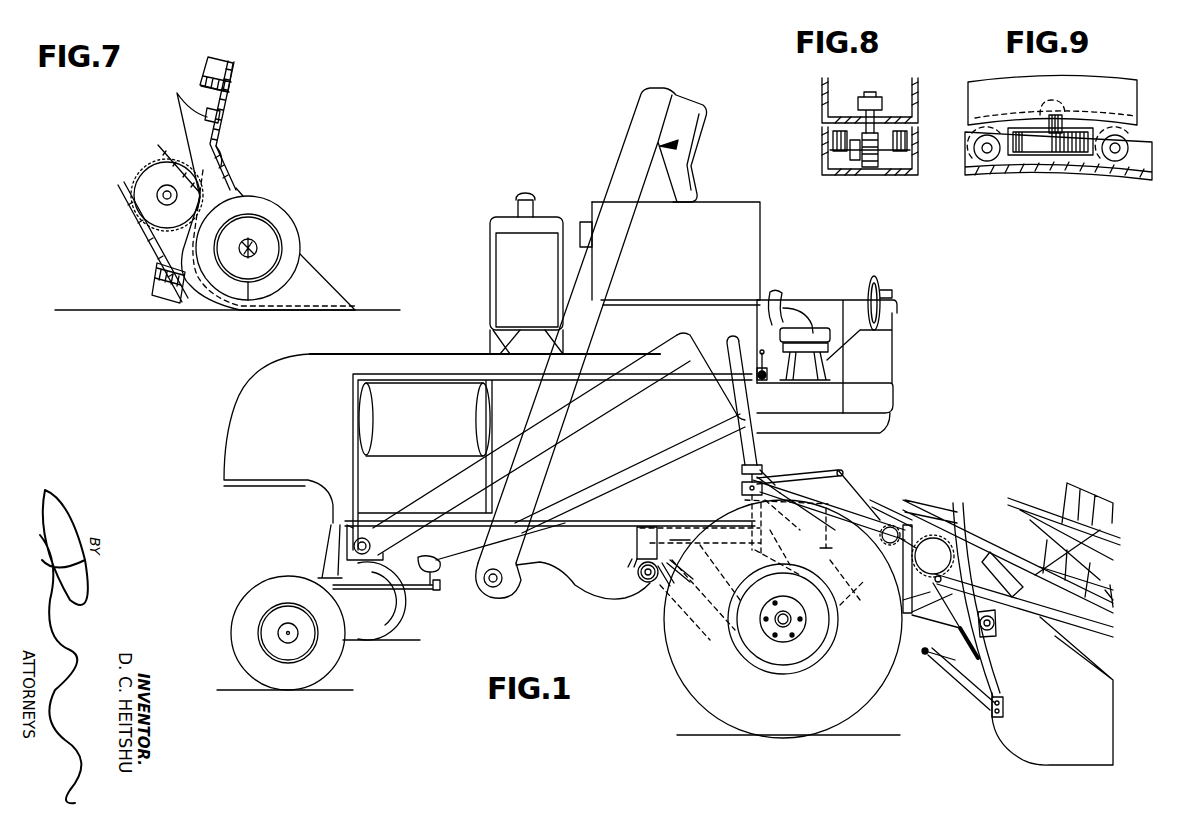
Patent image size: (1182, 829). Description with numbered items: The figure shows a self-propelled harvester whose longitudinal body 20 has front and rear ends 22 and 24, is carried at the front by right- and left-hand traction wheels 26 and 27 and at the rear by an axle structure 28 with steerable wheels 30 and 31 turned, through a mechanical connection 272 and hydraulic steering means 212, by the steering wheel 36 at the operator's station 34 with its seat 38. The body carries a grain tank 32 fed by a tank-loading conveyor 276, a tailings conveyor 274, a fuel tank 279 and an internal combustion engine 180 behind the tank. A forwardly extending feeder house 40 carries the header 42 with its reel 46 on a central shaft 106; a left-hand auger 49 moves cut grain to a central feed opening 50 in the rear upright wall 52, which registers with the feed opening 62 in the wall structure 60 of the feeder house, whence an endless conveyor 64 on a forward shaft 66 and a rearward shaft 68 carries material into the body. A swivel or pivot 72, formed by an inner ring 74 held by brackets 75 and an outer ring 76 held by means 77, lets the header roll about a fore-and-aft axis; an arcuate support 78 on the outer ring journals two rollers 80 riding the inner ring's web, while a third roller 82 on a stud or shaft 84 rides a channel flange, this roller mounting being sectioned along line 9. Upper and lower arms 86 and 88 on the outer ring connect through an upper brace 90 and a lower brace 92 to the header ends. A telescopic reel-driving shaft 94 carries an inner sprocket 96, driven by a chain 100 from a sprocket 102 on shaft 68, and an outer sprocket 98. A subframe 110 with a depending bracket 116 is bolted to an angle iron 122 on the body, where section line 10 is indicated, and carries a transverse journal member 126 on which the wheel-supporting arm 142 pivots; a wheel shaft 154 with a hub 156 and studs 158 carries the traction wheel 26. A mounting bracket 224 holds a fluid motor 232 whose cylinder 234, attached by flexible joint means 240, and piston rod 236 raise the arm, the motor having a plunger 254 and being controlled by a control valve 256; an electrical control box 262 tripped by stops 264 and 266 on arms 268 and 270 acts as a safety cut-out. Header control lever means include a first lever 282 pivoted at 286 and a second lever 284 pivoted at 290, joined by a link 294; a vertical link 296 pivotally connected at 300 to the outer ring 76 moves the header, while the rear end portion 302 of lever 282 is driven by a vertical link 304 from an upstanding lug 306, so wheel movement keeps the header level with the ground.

In FIG. 1, the longitudinal body 20 is at (450, 355).
In FIG. 1, the front end 22 is at (896, 410).
In FIG. 1, the rear end 24 is at (224, 456).
In FIG. 1, the right-hand traction wheel 26 is at (873, 698).
In FIG. 1, the left-hand traction wheel 27 is at (785, 475).
In FIG. 1, the axle structure 28 is at (330, 548).
In FIG. 1, the right-hand steerable wheel 30 is at (333, 660).
In FIG. 1, the left-hand steerable wheel 31 is at (392, 613).
In FIG. 1, the grain tank 32 is at (717, 208).
In FIG. 1, the operator's station 34 is at (893, 350).
In FIG. 1, the steering wheel 36 is at (878, 280).
In FIG. 1, the seat 38 is at (820, 338).
In FIG. 7, the feeder house 40 is at (186, 94).
In FIG. 1, the feeder house 40 is at (880, 510).
In FIG. 7, the header 42 is at (331, 282).
In FIG. 1, the header 42 is at (1117, 749).
In FIG. 1, the reel 46 is at (1095, 493).
In FIG. 7, the left-hand auger 49 is at (280, 215).
In FIG. 7, the central feed opening 50 is at (224, 164).
In FIG. 7, the rear upright transverse wall 52 is at (222, 140).
In FIG. 7, the wall structure 60 is at (221, 115).
In FIG. 7, the feed opening 62 is at (196, 117).
In FIG. 7, the endless conveyor 64 is at (156, 147).
In FIG. 7, the transverse shaft 66 is at (165, 202).
In FIG. 1, the transverse shaft 68 is at (760, 470).
In FIG. 7, the swivel or pivot 72 is at (240, 65).
In FIG. 1, the swivel or pivot 72 is at (959, 497).
In FIG. 7, the inner ring 74 is at (231, 87).
In FIG. 8, the inner ring 74 is at (826, 170).
In FIG. 9, the inner ring 74 is at (1132, 176).
In FIG. 7, the brackets 75 is at (203, 78).
In FIG. 7, the outer ring 76 is at (210, 60).
In FIG. 8, the outer ring 76 is at (822, 88).
In FIG. 9, the outer ring 76 is at (1118, 88).
In FIG. 7, the means 77 is at (192, 302).
In FIG. 8, the arcuate support 78 is at (852, 165).
In FIG. 9, the arcuate support 78 is at (980, 130).
In FIG. 8, the rollers 80 is at (870, 167).
In FIG. 9, the rollers 80 is at (990, 162).
In FIG. 8, the third roller 82 is at (838, 142).
In FIG. 9, the third roller 82 is at (1040, 155).
In FIG. 8, the stud or shaft 84 is at (870, 95).
In FIG. 9, the stud or shaft 84 is at (1060, 106).
In FIG. 1, the upper rigid arm 86 is at (942, 505).
In FIG. 1, the lower arm or bracket 88 is at (926, 658).
In FIG. 1, the upper right-hand brace 90 is at (980, 533).
In FIG. 1, the right-hand lower brace 92 is at (975, 690).
In FIG. 1, the reel-driving shaft 94 is at (905, 620).
In FIG. 1, the sprocket 96 is at (912, 585).
In FIG. 1, the sprocket 98 is at (996, 632).
In FIG. 1, the chain 100 is at (892, 568).
In FIG. 1, the sprocket 102 is at (778, 447).
In FIG. 1, the central shaft 106 is at (1115, 593).
In FIG. 1, the subframe 110 is at (677, 540).
In FIG. 1, the depending support or bracket 116 is at (678, 556).
In FIG. 1, the angle iron 122 is at (562, 525).
In FIG. 1, the transverse journal member 126 is at (638, 587).
In FIG. 1, the right-hand wheel-supporting arm 142 is at (715, 625).
In FIG. 1, the right-hand wheel shaft 154 is at (783, 630).
In FIG. 1, the wheel-mounting hub 156 is at (807, 637).
In FIG. 1, the wheel-mounting studs 158 is at (778, 640).
In FIG. 1, the internal combustion engine 180 is at (500, 260).
In FIG. 1, the hydraulic steering means 212 is at (412, 590).
In FIG. 1, the right-hand mounting bracket 224 is at (742, 488).
In FIG. 1, the right-hand fluid motor 232 is at (731, 342).
In FIG. 1, the cylinder 234 is at (732, 362).
In FIG. 1, the piston rod 236 is at (728, 572).
In FIG. 1, the flexible joint means 240 is at (742, 476).
In FIG. 1, the fluid-actuated plunger 254 is at (583, 222).
In FIG. 1, the control valve 256 is at (768, 378).
In FIG. 1, the electrical control box 262 is at (637, 538).
In FIG. 1, the stop 264 is at (630, 565).
In FIG. 1, the stop 266 is at (700, 568).
In FIG. 1, the arm 268 is at (638, 575).
In FIG. 1, the arm 270 is at (705, 608).
In FIG. 1, the mechanical connection 272 is at (645, 470).
In FIG. 1, the tailings conveyor 274 is at (430, 497).
In FIG. 1, the tank-loading conveyor 276 is at (610, 268).
In FIG. 1, the fuel tank 279 is at (424, 419).
In FIG. 1, the first lever or bell crank 282 is at (800, 480).
In FIG. 1, the second lever or bell crank 284 is at (882, 540).
In FIG. 1, the pivot 286 is at (828, 472).
In FIG. 1, the pivot 290 is at (893, 490).
In FIG. 1, the link 294 is at (848, 478).
In FIG. 1, the vertical link 296 is at (980, 523).
In FIG. 1, the pivotal connection 300 is at (913, 620).
In FIG. 1, the rear end portion 302 is at (793, 515).
In FIG. 1, the vertical link 304 is at (783, 552).
In FIG. 1, the upstanding ear or lug 306 is at (859, 600).
In FIG. 8, the section line 9— 9 is at (925, 127).
In FIG. 1, the section line 10- 10 is at (663, 507).